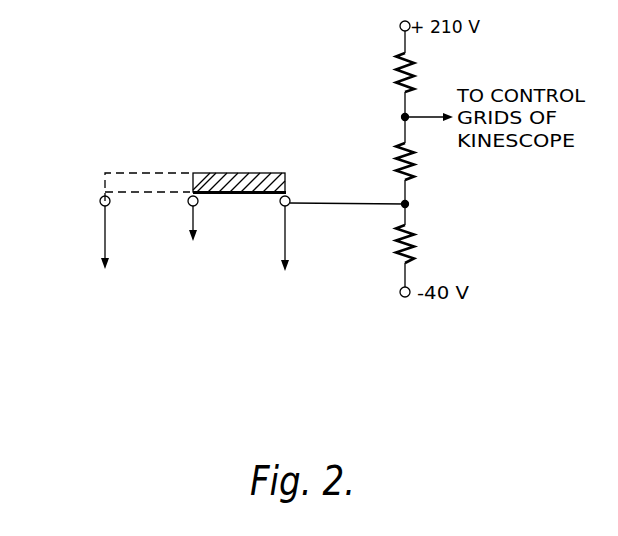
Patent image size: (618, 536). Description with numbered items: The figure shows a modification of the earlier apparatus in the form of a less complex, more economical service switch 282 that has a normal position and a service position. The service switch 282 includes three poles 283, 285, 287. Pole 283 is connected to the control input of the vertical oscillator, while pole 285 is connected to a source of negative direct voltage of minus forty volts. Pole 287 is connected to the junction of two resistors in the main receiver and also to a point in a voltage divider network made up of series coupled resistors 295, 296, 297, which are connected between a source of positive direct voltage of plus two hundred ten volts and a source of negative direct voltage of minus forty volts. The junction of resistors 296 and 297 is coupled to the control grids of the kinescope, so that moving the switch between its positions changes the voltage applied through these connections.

The service switch 282 is at (210, 406).
The pole 283 is at (101, 206).
The pole 285 is at (189, 206).
The pole 287 is at (281, 206).
The resistor 295 is at (416, 240).
The resistor 296 is at (397, 162).
The resistor 297 is at (396, 74).